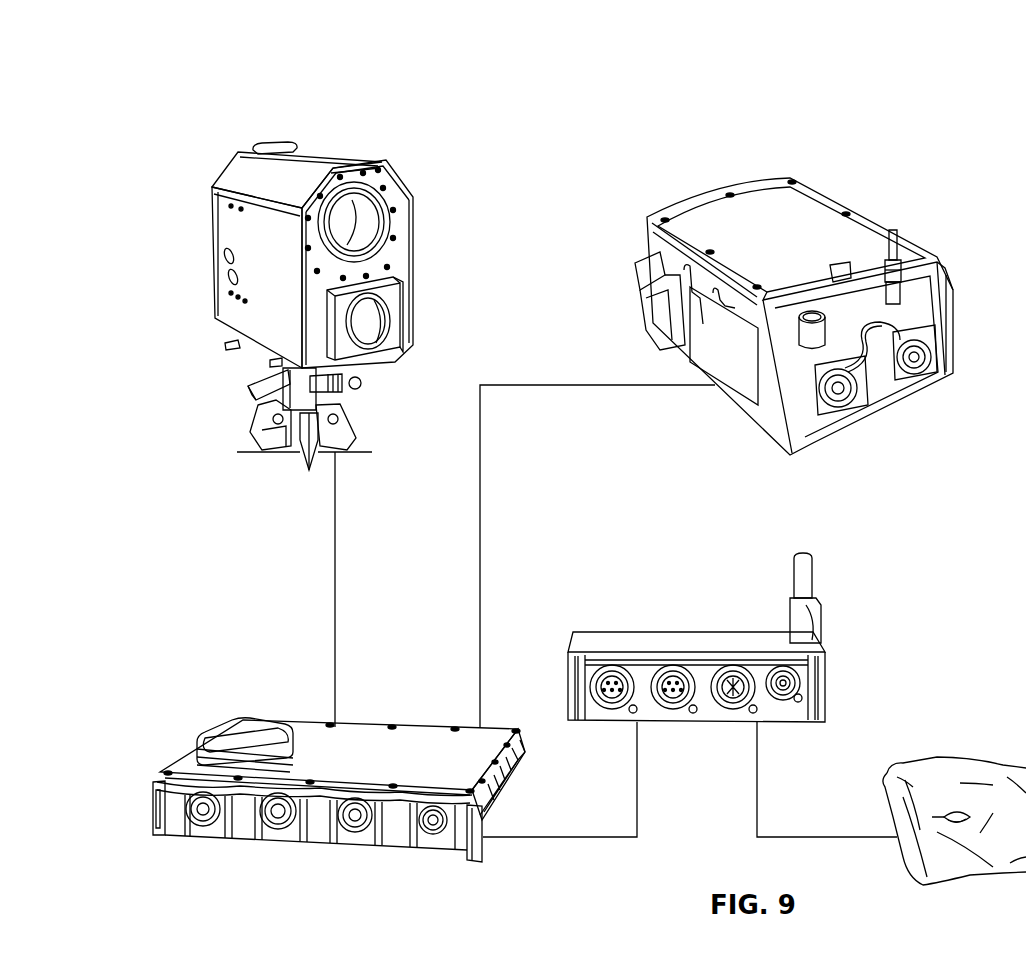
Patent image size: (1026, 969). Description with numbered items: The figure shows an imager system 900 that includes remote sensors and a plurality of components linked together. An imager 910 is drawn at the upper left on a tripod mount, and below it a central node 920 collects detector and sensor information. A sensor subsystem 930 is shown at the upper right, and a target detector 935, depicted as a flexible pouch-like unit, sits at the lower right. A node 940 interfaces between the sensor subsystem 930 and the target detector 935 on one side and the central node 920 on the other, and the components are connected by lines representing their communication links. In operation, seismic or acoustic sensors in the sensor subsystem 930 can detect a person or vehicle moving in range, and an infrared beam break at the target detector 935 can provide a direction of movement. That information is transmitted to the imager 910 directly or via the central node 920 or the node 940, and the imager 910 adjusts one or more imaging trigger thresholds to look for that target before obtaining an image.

The imager system 900 is at (236, 58).
The imager 910 is at (325, 152).
The central node 920 is at (360, 727).
The sensor subsystem 930 is at (748, 178).
The target detector 935 is at (1004, 768).
The node 940 is at (672, 632).